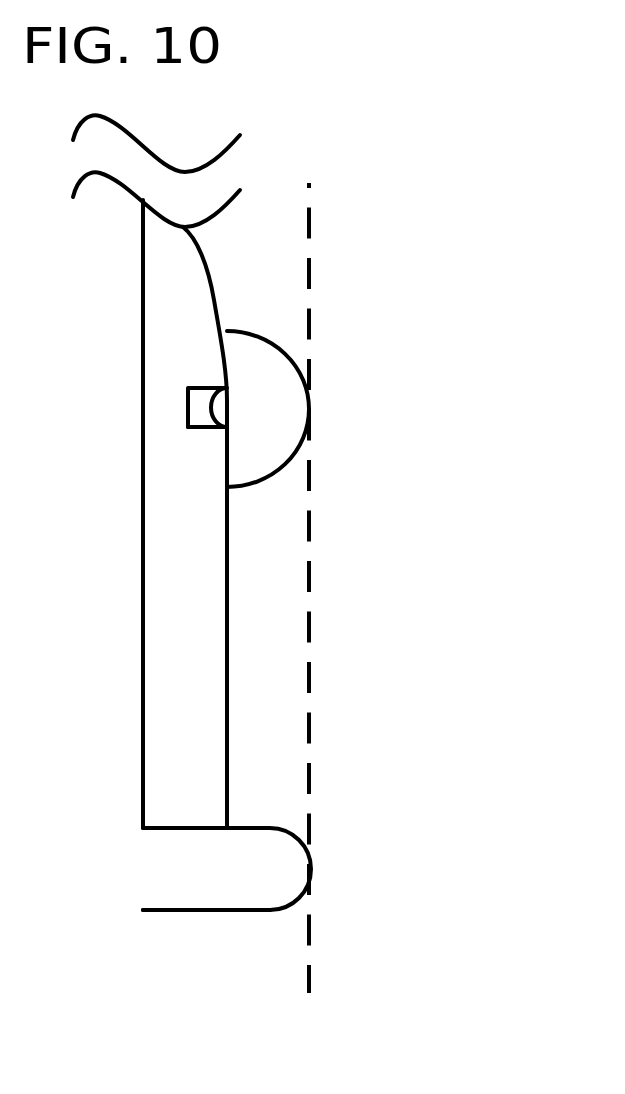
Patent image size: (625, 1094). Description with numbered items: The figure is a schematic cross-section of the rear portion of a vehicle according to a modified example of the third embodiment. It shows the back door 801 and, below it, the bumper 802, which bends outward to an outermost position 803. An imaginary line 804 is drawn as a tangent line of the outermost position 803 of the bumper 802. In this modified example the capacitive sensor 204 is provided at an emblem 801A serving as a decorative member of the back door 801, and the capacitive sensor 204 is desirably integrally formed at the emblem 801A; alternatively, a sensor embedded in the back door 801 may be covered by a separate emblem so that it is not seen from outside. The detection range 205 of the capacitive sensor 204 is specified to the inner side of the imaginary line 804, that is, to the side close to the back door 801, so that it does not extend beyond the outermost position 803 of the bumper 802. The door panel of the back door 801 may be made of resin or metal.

The back door 801 is at (212, 280).
The emblem 801A is at (243, 408).
The detection range 205 is at (282, 350).
The capacitive sensor 204 is at (202, 428).
The imaginary line 804 is at (309, 523).
The outermost position 803 is at (312, 862).
The bumper 802 is at (172, 910).